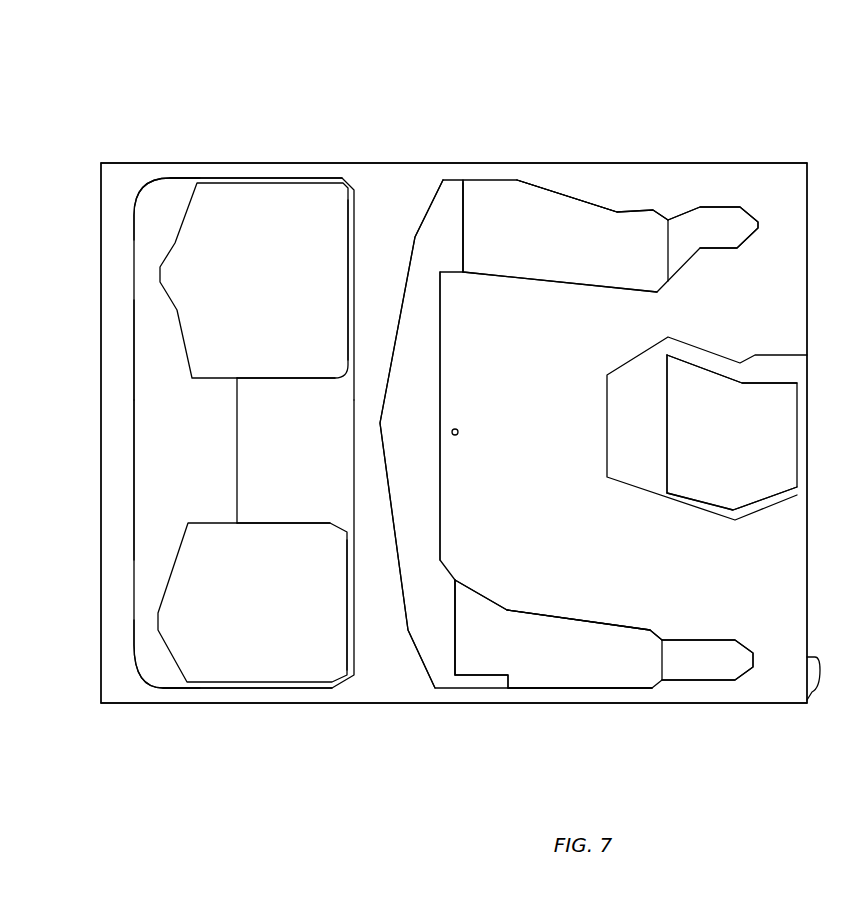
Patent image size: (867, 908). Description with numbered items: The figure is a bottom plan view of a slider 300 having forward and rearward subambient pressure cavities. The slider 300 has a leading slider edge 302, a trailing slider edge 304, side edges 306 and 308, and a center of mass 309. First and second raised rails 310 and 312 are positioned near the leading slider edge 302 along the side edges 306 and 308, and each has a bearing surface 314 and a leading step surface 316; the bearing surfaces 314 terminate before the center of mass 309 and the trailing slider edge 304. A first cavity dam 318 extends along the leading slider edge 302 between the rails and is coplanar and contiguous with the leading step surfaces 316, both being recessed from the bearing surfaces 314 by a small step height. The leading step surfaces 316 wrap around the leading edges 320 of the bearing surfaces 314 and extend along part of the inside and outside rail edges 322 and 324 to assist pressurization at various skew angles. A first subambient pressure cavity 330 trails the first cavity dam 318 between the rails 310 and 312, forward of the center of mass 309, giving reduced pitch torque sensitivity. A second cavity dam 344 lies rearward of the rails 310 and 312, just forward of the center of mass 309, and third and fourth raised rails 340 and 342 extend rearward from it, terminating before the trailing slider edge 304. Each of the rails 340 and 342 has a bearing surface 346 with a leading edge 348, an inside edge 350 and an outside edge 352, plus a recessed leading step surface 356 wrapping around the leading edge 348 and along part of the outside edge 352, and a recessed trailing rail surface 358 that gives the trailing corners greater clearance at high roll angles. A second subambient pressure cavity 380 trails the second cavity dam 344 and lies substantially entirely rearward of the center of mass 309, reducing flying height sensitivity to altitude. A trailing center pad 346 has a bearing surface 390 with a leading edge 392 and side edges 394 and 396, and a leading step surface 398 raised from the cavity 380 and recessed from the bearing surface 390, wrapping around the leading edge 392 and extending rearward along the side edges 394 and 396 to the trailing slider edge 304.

The slider 300 is at (694, 92).
The leading slider edge 302 is at (95, 672).
The trailing slider edge 304 is at (830, 433).
The side edge 306 is at (757, 705).
The side edge 308 is at (757, 164).
The center of mass 309 is at (458, 430).
The first raised rail 310 is at (281, 656).
The second raised rail 312 is at (302, 198).
The bearing surface 314 is at (228, 190).
The leading step surface 316 is at (145, 233).
The first cavity dam 318 is at (157, 417).
The leading edge 320 is at (175, 310).
The inside rail edge 322 is at (287, 377).
The outside rail edge 324 is at (272, 183).
The first subambient pressure cavity 330 is at (330, 440).
The third raised rail 340 is at (628, 664).
The fourth raised rail 342 is at (633, 234).
The second cavity dam 344 is at (421, 379).
The bearing surface 346 is at (533, 205).
The leading edge 348 is at (465, 238).
The inside edge 350 is at (535, 280).
The outside edge 352 is at (553, 200).
The leading step surface 356 is at (438, 212).
The trailing rail surface 358 is at (687, 240).
The second subambient pressure cavity 380 is at (512, 527).
The bearing surface 390 is at (782, 456).
The leading edge 392 is at (668, 420).
The side edge 394 is at (750, 382).
The side edge 396 is at (733, 507).
The leading step surface 398 is at (632, 385).